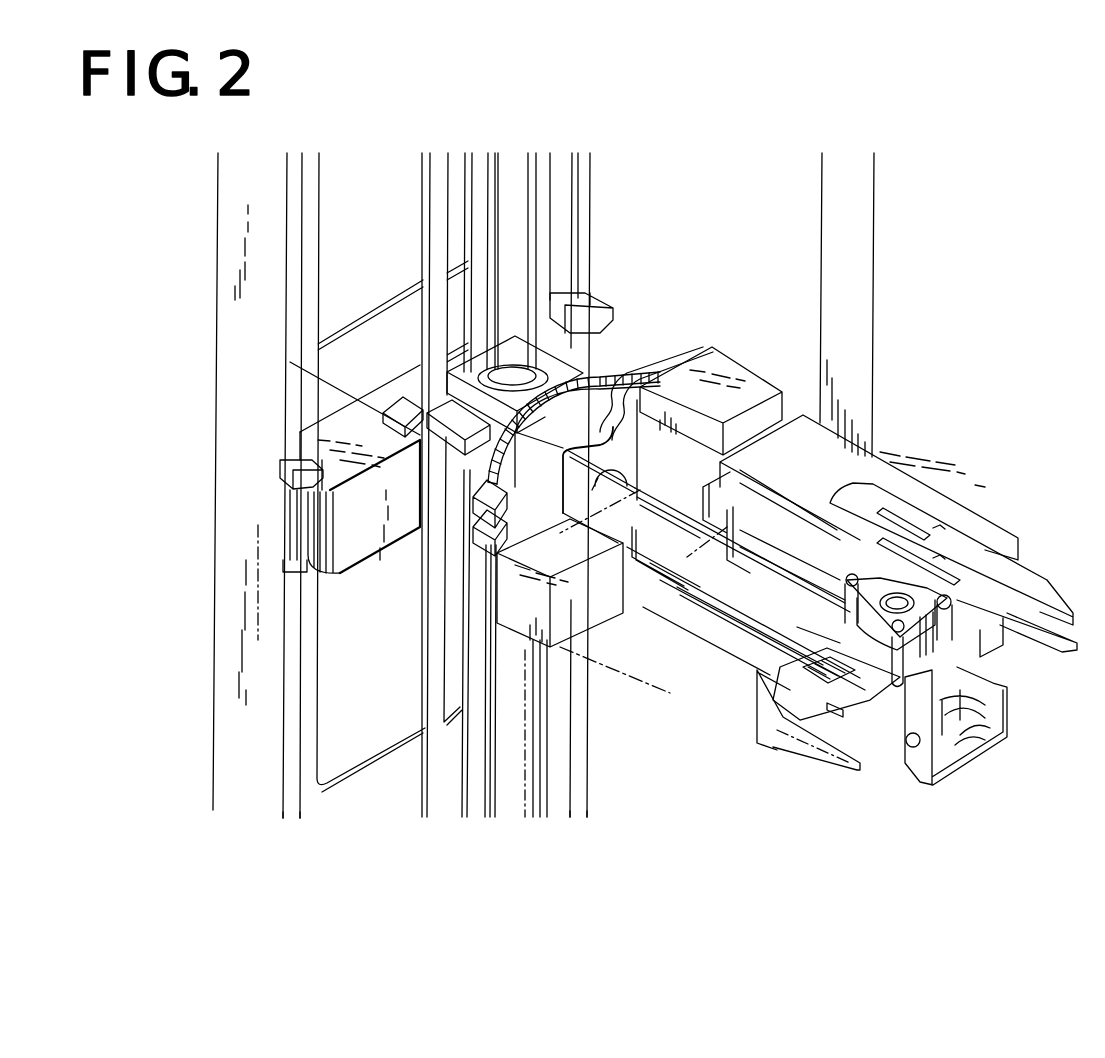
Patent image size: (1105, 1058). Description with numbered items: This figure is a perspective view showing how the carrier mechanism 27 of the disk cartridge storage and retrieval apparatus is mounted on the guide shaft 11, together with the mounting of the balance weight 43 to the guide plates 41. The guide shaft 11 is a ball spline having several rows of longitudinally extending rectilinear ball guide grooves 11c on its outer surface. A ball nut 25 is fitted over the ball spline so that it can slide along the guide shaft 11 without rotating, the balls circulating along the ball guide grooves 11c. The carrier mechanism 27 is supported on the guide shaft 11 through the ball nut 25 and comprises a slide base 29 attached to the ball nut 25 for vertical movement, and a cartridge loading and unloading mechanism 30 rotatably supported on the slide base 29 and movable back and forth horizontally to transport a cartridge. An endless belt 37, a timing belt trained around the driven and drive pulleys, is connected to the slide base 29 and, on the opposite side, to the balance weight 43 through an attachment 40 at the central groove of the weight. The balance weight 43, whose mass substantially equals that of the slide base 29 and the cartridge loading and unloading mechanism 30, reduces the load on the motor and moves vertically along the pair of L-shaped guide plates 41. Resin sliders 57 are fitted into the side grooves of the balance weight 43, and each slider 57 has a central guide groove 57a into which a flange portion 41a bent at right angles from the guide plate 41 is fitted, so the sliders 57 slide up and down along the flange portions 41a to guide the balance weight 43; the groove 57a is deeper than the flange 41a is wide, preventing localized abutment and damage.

The guide shaft 11 is at (510, 200).
The ball guide grooves 11c is at (495, 156).
The ball nut 25 is at (553, 330).
The carrier mechanism 27 is at (684, 331).
The slide base 29 is at (290, 362).
The cartridge loading and unloading mechanism 30 is at (840, 425).
The endless belt 37 is at (430, 232).
The attachment 40 is at (413, 397).
The guide plates 41 is at (240, 238).
The flange portions 41a is at (575, 797).
The balance weight 43 is at (335, 577).
The sliders 57 is at (268, 530).
The guide groove 57a is at (283, 470).